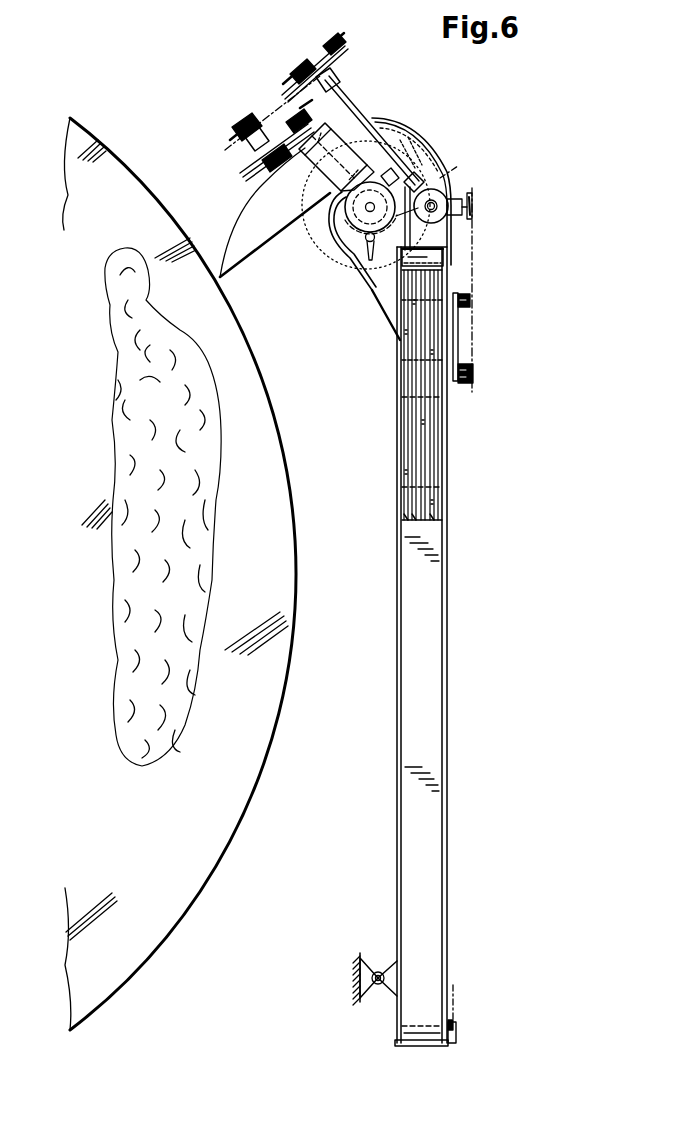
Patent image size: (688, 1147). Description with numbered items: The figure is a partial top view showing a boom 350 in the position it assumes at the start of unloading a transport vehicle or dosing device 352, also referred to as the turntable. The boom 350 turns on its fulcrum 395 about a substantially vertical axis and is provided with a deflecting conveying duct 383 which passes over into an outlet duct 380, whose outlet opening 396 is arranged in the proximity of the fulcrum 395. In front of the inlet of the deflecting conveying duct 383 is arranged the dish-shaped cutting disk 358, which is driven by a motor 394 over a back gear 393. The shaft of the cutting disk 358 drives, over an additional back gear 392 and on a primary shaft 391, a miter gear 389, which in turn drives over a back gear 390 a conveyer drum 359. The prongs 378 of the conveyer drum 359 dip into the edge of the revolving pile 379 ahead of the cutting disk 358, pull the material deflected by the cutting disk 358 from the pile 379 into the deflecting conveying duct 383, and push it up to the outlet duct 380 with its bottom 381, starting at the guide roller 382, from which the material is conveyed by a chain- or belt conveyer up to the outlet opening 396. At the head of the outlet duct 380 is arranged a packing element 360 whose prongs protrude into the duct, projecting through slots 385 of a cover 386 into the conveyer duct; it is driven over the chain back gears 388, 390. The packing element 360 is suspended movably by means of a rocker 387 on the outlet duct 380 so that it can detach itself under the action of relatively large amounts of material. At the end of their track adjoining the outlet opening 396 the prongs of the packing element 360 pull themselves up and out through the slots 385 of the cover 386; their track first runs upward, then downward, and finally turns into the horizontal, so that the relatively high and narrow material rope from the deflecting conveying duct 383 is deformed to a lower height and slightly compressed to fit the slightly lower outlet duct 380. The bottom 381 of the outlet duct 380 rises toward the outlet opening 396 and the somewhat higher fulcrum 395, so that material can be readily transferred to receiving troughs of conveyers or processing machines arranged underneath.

The boom 350 is at (459, 518).
The dosing device 352 is at (203, 820).
The cutting disk 358 is at (240, 211).
The conveyer drum 359 is at (322, 225).
The packing element 360 is at (412, 358).
The prongs 378 is at (367, 250).
The revolving pile 379 is at (202, 508).
The outlet duct 380 is at (397, 627).
The bottom 381 is at (444, 705).
The guide roller 382 is at (447, 258).
The deflecting conveying duct 383 is at (413, 133).
The slots 385 is at (430, 284).
The cover 386 is at (412, 307).
The rocker 387 is at (458, 350).
The chain back gear 388 is at (476, 222).
The miter gear 389 is at (452, 190).
The back gear 390 is at (447, 171).
The primary shaft 391 is at (337, 97).
The back gear 392 is at (288, 82).
The back gear 393 is at (281, 140).
The motor 394 is at (342, 128).
The fulcrum 395 is at (380, 972).
The outlet opening 396 is at (430, 1047).